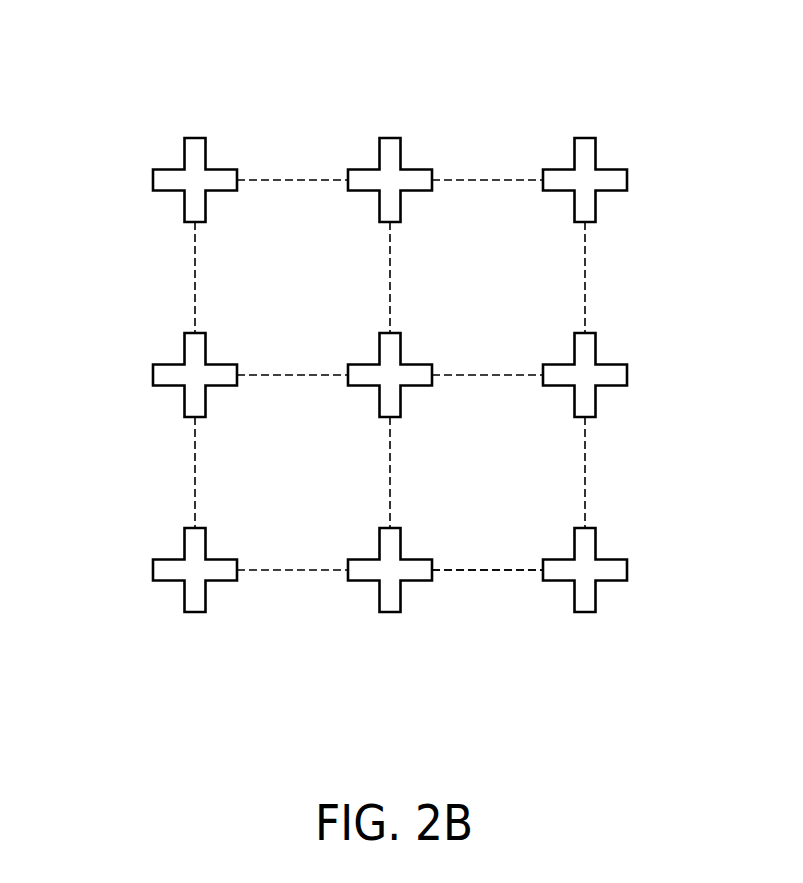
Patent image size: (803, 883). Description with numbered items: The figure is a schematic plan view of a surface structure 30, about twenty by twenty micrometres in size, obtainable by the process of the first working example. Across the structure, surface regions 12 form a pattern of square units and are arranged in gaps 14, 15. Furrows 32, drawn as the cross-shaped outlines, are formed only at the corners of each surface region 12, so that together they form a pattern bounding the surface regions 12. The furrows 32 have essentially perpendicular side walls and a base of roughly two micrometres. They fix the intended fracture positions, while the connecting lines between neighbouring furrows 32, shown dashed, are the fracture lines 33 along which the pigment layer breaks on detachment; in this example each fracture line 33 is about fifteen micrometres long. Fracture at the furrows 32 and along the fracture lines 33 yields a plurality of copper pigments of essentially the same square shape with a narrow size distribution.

The surface structure 30 is at (180, 118).
The furrows 32 is at (584, 138).
The fracture lines 33 is at (586, 276).
The surface regions 12 is at (245, 281).
The gaps 14 is at (287, 610).
The gaps 15 is at (487, 610).